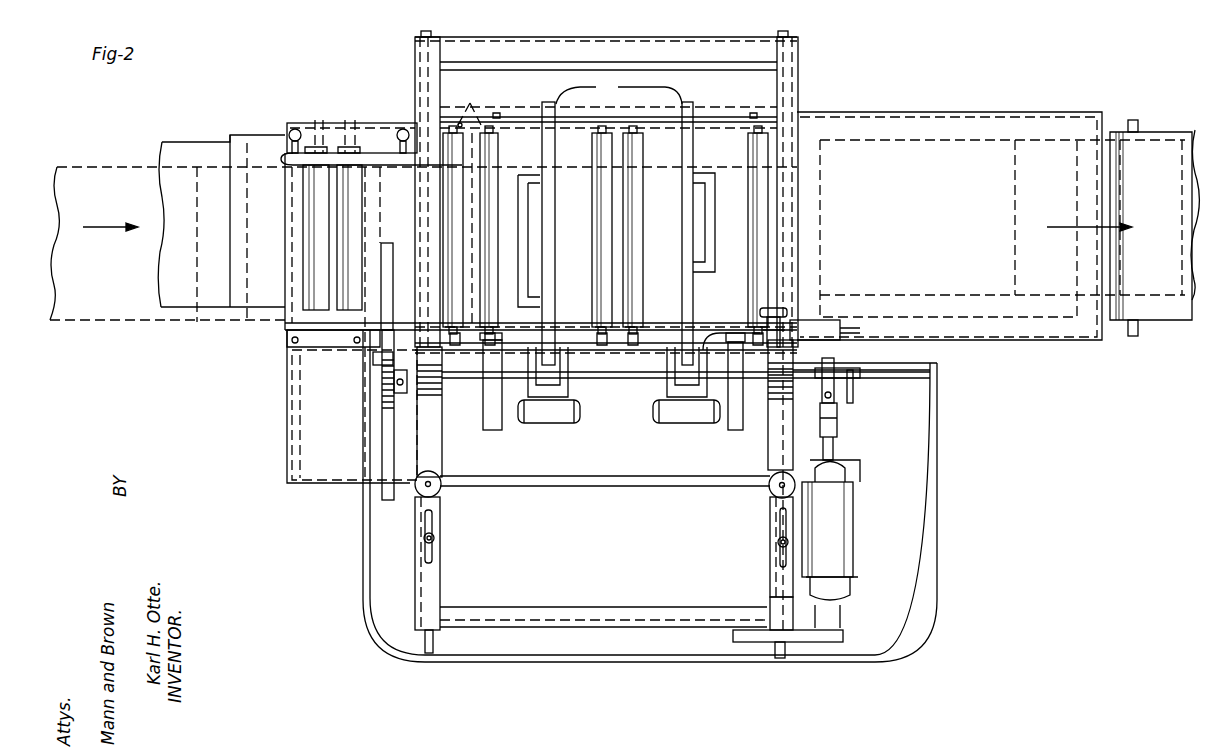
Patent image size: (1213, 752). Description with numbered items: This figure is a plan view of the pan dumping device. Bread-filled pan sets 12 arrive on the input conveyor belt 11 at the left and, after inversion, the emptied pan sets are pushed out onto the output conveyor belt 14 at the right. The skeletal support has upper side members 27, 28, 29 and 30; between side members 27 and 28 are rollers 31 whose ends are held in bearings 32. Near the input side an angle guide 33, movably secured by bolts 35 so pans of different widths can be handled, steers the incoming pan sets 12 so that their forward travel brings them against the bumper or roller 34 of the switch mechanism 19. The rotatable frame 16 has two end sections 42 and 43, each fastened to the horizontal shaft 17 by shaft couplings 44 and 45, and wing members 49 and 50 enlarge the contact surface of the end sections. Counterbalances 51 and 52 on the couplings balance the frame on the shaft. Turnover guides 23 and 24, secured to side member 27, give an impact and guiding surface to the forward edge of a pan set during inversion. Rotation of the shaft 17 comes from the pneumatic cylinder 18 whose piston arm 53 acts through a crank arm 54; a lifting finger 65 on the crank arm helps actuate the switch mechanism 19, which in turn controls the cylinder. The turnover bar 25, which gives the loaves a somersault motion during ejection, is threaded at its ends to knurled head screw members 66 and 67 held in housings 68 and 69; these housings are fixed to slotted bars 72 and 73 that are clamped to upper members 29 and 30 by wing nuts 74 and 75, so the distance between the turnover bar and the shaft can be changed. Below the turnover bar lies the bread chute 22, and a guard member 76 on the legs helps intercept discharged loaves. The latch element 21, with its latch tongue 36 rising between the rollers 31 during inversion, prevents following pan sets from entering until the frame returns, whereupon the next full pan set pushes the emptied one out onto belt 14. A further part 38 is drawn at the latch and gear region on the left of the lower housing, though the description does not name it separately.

The input conveyor belt 11 is at (203, 144).
The pan sets 12 is at (108, 164).
The output conveyor belt 14 is at (1176, 329).
The frame 16 is at (619, 90).
The horizontal shaft 17 is at (604, 390).
The pneumatic cylinder 18 is at (853, 512).
The switch mechanism 19 is at (812, 320).
The latch element 21 is at (370, 364).
The chute 22 is at (568, 628).
The turnover guide 23 is at (724, 430).
The turnover guide 24 is at (491, 430).
The turnover bar 25 is at (597, 487).
The upper side member 27 is at (669, 318).
The upper side member 28 is at (702, 107).
The upper side member 29 is at (442, 415).
The upper side member 30 is at (768, 446).
The rollers 31 is at (499, 139).
The bearings 32 is at (476, 104).
The angle guide 33 is at (380, 163).
The bumper or roller 34 is at (762, 311).
The bolts 35 is at (296, 131).
The latch tongue 36 is at (383, 242).
The gear 38 is at (380, 390).
The end section 42 is at (693, 162).
The end section 43 is at (555, 155).
The shaft coupling 44 is at (672, 372).
The shaft coupling 45 is at (566, 372).
The wing member 49 is at (713, 204).
The wing member 50 is at (529, 307).
The counterbalance 51 is at (681, 423).
The counterbalance 52 is at (560, 423).
The piston arm 53 is at (840, 427).
The crank arm 54 is at (834, 366).
The lifting finger 65 is at (855, 384).
The knurled head screw member 66 is at (772, 490).
The knurled head screw member 67 is at (437, 492).
The housing 68 is at (773, 475).
The housing 69 is at (440, 476).
The slotted bar 72 is at (770, 512).
The slotted bar 73 is at (436, 530).
The wing nut 74 is at (777, 541).
The wing nut 75 is at (437, 542).
The guard member 76 is at (665, 626).